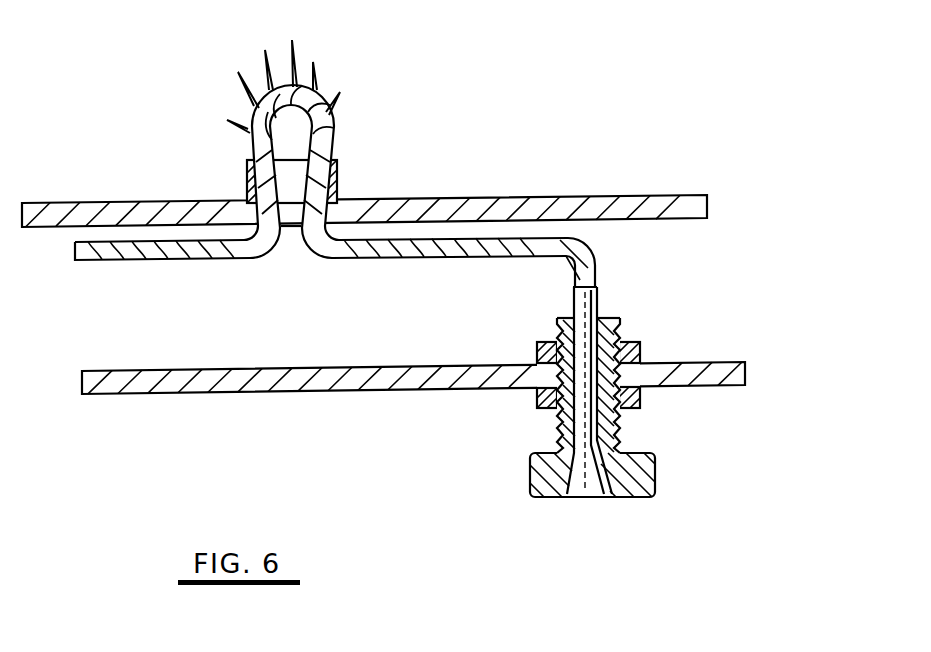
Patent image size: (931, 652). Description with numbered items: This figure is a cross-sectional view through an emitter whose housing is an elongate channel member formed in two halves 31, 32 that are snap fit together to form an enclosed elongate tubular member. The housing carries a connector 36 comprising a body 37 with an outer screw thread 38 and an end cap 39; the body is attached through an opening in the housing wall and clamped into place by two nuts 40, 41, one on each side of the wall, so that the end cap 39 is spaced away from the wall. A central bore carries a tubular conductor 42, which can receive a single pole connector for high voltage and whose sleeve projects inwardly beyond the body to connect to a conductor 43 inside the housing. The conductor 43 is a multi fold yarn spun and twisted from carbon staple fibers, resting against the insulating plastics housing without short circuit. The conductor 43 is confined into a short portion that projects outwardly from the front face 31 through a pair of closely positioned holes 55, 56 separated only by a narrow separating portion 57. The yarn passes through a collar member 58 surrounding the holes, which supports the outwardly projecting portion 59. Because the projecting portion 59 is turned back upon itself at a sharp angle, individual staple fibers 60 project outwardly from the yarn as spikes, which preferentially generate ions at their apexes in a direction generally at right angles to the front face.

The channel member half 31 is at (603, 192).
The channel member half 32 is at (262, 402).
The connector 36 is at (617, 414).
The body 37 is at (549, 425).
The outer screw thread 38 is at (619, 318).
The end cap 39 is at (530, 490).
The nut 40 is at (532, 336).
The nut 41 is at (645, 410).
The conductor 42 is at (583, 480).
The conductor 43 is at (482, 259).
The hole 55 is at (340, 195).
The hole 56 is at (248, 194).
The separating portion 57 is at (290, 232).
The collar member 58 is at (293, 155).
The projecting portion 59 is at (242, 57).
The staple fibers 60 is at (293, 50).